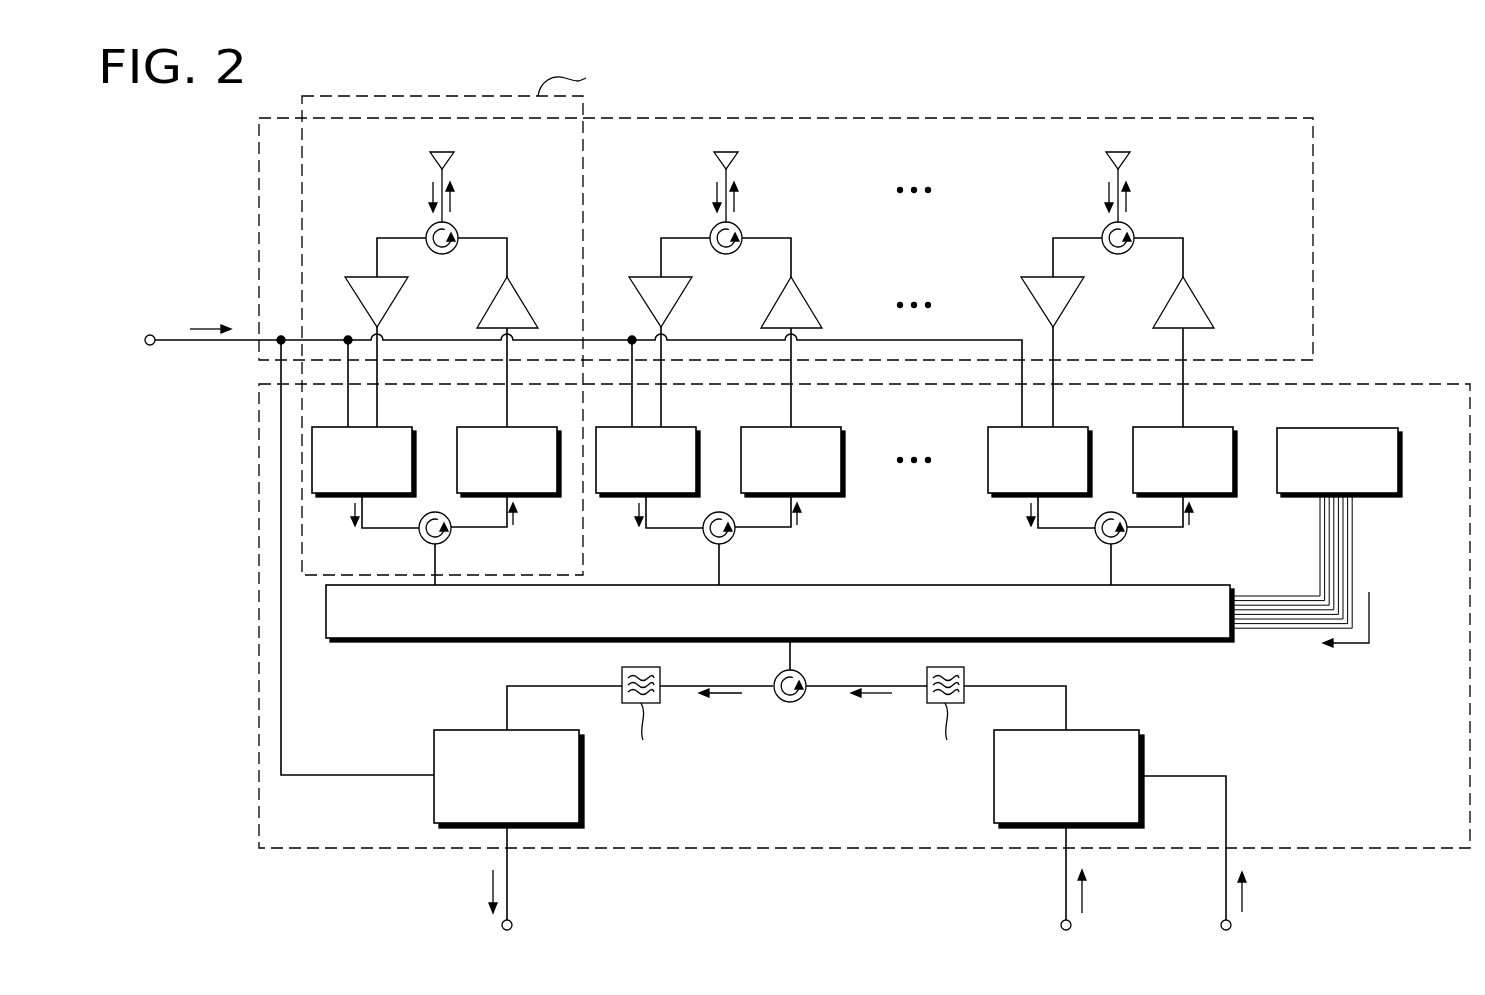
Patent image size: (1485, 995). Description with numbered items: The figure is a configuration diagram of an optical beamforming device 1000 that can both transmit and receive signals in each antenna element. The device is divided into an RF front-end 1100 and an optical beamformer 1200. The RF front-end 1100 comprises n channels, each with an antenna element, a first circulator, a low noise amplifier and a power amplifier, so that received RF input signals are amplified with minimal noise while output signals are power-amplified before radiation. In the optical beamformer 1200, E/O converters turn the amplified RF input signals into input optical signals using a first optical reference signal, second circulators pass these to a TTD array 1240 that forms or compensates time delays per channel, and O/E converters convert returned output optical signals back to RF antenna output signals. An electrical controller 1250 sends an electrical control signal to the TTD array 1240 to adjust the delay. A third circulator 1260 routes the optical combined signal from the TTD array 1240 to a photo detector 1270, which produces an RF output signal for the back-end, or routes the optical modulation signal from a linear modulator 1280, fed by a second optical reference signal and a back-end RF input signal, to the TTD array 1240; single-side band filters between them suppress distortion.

The optical beamforming device 1000 is at (1463, 67).
The RF front-end 1100 is at (1267, 118).
The optical beamformer 1200 is at (1420, 384).
The TTD array 1240 is at (900, 584).
The electrical controller 1250 is at (1370, 428).
The third circulator 1260 is at (788, 702).
The photo detector 1270 is at (579, 797).
The linear modulator 1280 is at (994, 797).